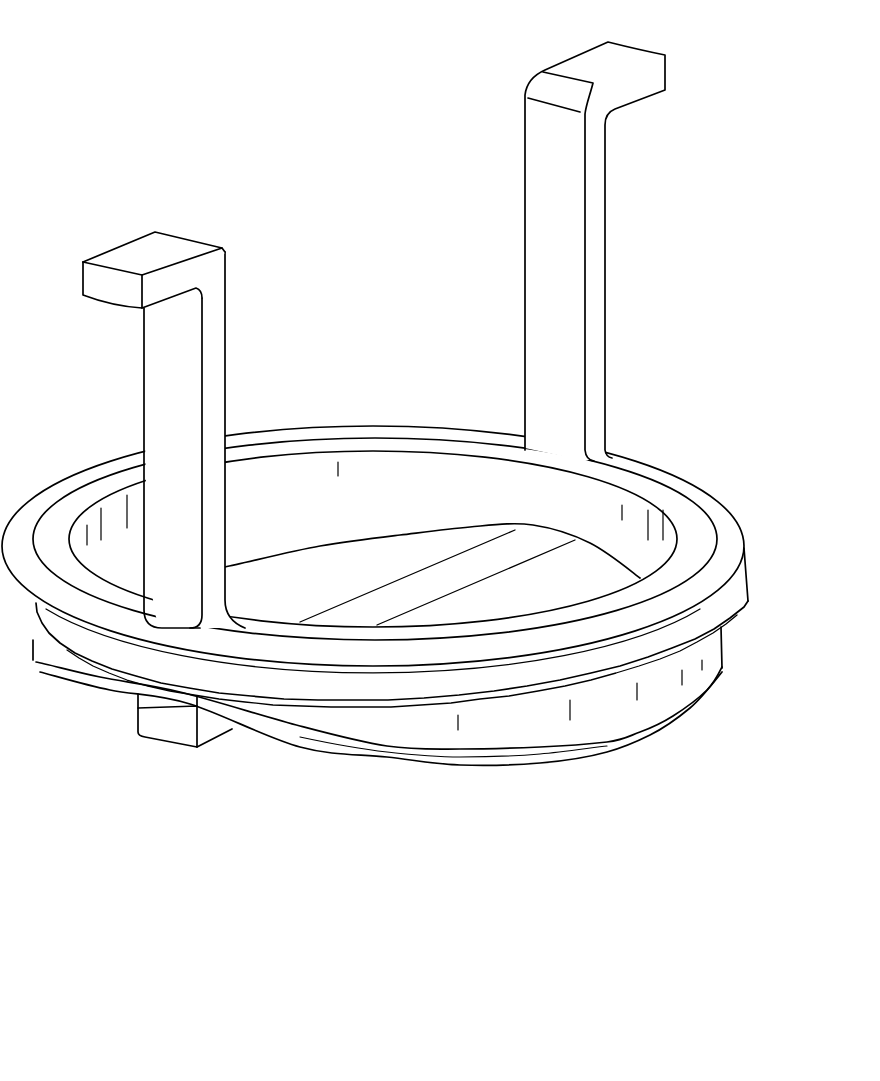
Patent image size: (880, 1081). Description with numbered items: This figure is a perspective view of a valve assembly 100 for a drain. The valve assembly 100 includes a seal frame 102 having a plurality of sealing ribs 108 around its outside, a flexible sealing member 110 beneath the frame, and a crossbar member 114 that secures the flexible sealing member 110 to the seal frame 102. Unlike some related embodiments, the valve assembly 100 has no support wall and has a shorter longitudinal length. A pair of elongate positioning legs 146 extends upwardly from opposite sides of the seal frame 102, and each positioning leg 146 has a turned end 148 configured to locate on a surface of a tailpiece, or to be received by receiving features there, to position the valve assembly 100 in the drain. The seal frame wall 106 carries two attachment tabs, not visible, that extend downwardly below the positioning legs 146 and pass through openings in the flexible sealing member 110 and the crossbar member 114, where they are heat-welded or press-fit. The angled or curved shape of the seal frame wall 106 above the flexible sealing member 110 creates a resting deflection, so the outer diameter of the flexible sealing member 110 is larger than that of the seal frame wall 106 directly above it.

The valve assembly 100 is at (256, 162).
The seal frame 102 is at (716, 655).
The seal frame wall 106 is at (387, 728).
The sealing ribs 108 is at (727, 537).
The flexible sealing member 110 is at (612, 752).
The crossbar member 114 is at (172, 742).
The positioning legs 146 is at (172, 388).
The turned end 148 is at (108, 285).